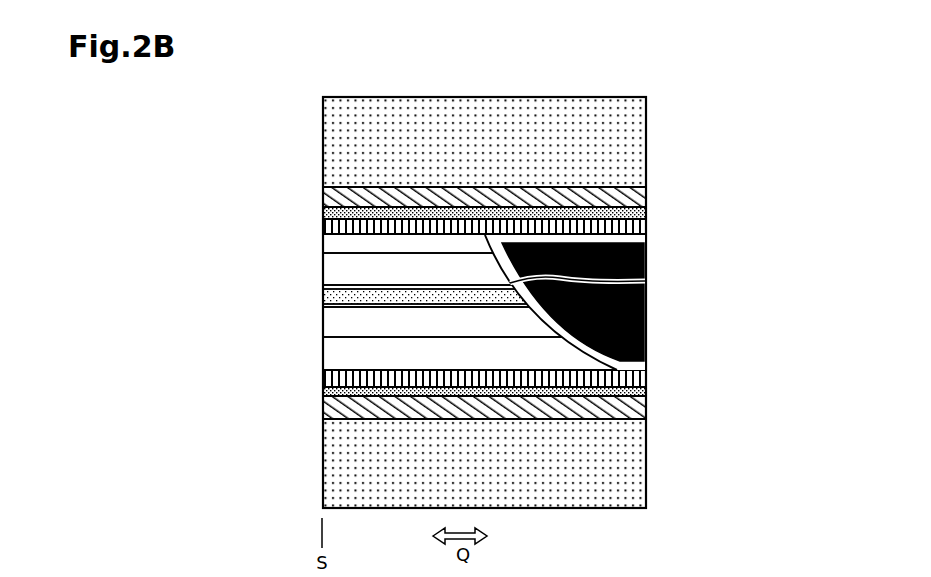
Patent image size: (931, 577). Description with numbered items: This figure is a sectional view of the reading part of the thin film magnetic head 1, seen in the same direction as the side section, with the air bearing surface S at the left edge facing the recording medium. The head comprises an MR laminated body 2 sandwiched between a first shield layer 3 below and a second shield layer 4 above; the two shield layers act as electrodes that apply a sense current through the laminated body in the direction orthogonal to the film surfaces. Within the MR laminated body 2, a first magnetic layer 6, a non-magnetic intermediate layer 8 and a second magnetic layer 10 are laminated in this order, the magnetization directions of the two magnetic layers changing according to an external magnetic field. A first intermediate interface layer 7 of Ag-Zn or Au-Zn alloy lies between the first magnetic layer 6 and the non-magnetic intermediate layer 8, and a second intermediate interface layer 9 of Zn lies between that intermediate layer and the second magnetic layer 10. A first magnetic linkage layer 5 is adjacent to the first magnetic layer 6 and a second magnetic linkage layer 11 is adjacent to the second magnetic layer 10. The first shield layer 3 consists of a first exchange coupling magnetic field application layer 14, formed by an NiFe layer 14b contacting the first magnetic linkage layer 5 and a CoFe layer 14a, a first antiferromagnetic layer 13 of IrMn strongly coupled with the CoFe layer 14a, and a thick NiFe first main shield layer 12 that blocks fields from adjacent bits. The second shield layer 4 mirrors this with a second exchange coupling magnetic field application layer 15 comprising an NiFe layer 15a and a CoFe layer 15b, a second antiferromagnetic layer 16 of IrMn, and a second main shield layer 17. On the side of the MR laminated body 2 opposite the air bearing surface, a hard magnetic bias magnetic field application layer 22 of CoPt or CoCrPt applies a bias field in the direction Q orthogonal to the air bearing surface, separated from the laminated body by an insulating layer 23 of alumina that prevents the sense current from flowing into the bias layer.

The thin film magnetic head 1 is at (466, 66).
The MR laminated body 2 is at (425, 302).
The first shield layer 3 is at (410, 434).
The second shield layer 4 is at (407, 166).
The first magnetic linkage layer 5 is at (456, 353).
The first magnetic layer 6 is at (323, 330).
The first intermediate interface layer 7 is at (323, 305).
The non-magnetic intermediate layer 8 is at (323, 296).
The second intermediate interface layer 9 is at (323, 287).
The second magnetic layer 10 is at (323, 270).
The second magnetic linkage layer 11 is at (323, 247).
The first main shield layer 12 is at (323, 471).
The first antiferromagnetic layer 13 is at (323, 412).
The first exchange coupling magnetic field application layer 14 is at (426, 378).
The CoFe layer 14a is at (323, 392).
The NiFe layer 14b is at (323, 378).
The second exchange coupling magnetic field application layer 15 is at (426, 218).
The NiFe layer 15a is at (323, 230).
The CoFe layer 15b is at (323, 215).
The second antiferromagnetic layer 16 is at (323, 197).
The second main shield layer 17 is at (323, 143).
The bias magnetic field application layer 22 is at (594, 302).
The insulating layer 23 is at (645, 281).